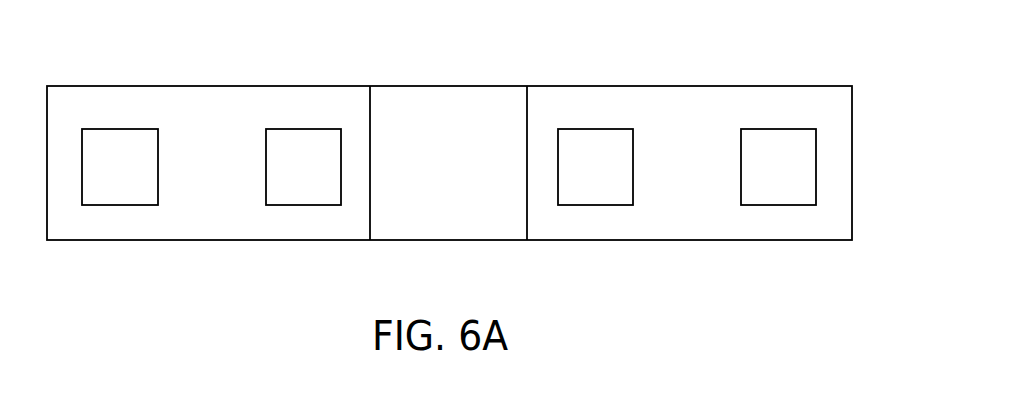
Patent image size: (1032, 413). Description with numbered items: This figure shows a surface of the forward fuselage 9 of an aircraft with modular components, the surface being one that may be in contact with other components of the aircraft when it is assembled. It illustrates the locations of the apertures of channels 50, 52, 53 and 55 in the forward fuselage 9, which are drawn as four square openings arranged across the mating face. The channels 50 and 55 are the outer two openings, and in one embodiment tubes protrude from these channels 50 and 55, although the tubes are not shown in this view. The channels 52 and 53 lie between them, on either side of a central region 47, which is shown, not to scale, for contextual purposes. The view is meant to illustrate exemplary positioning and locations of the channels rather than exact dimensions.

The forward fuselage 9 is at (202, 103).
The region 47 is at (478, 108).
The channel 50 is at (132, 182).
The channel 52 is at (318, 183).
The channel 53 is at (607, 183).
The channel 55 is at (793, 182).